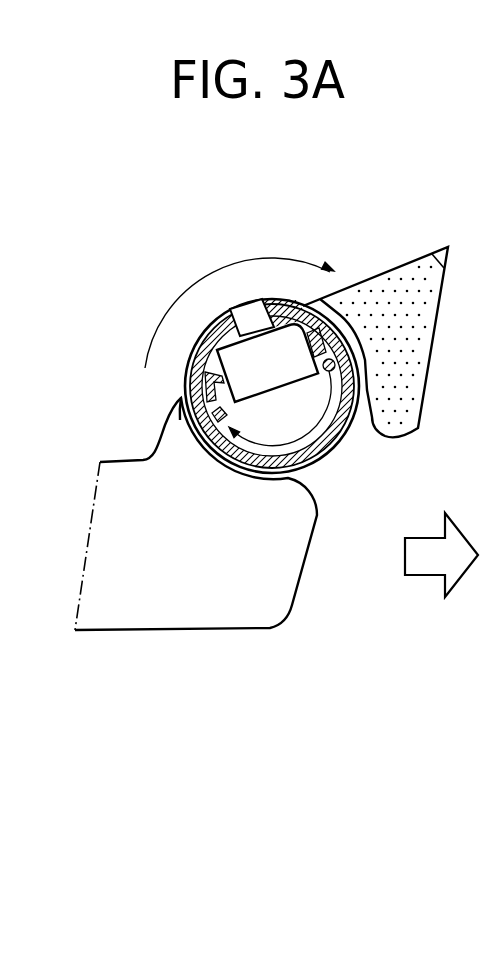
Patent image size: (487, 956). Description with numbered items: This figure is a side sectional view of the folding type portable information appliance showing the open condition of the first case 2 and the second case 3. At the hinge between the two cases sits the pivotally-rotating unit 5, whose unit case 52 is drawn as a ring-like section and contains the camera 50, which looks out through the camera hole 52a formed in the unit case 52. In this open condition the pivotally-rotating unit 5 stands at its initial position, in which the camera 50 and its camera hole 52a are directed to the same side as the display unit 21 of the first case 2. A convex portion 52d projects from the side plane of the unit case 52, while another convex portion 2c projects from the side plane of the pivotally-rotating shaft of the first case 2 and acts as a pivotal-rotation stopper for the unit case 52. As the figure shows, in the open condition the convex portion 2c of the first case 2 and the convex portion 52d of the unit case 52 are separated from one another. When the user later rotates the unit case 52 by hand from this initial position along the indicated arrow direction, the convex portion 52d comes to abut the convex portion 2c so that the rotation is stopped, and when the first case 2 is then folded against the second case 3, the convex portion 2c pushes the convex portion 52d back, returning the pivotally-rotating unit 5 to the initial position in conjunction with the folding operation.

The first case 2 is at (371, 297).
The convex portion 2c is at (186, 398).
The second case 3 is at (174, 603).
The pivotally-rotating unit 5 is at (266, 282).
The display unit 21 is at (437, 250).
The camera 50 is at (235, 360).
The unit case 52 is at (320, 458).
The camera hole 52a is at (238, 312).
The convex portion 52d is at (337, 376).